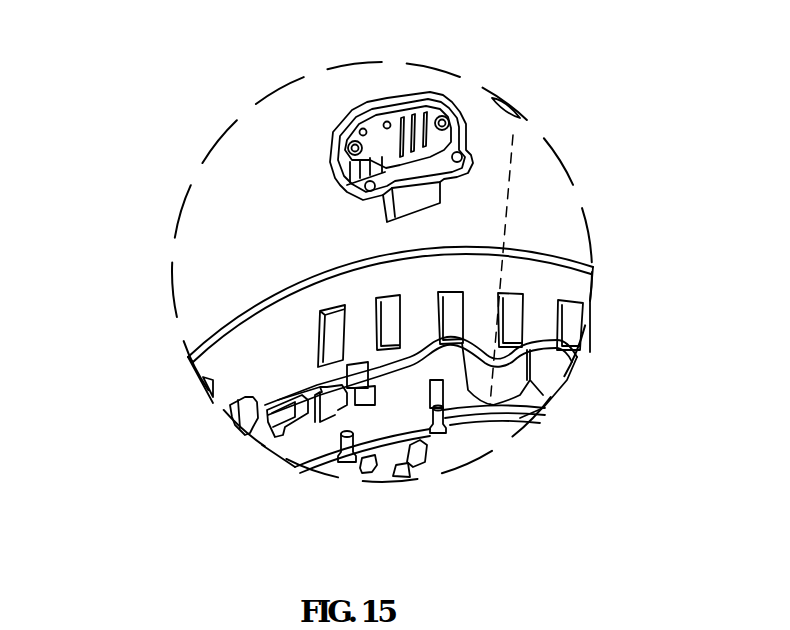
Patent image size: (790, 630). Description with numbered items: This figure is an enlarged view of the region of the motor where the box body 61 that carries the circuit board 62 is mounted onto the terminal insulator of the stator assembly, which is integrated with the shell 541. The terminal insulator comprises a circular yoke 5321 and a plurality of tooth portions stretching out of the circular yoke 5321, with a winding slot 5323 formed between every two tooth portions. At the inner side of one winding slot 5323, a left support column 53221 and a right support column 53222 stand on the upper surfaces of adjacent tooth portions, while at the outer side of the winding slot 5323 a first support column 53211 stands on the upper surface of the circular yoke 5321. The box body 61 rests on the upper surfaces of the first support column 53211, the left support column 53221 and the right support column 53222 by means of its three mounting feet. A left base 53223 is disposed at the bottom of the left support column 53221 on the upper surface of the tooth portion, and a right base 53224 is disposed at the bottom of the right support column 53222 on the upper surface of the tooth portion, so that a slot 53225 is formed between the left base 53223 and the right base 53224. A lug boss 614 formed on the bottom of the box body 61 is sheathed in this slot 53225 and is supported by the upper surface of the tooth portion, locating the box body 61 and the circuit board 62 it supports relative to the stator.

The box body 61 is at (335, 160).
The circuit board 62 is at (380, 135).
The lug boss 614 is at (418, 198).
The shell 541 is at (287, 327).
The first support column 53211 is at (355, 403).
The circular yoke 5321 is at (505, 383).
The winding slot 5323 is at (320, 445).
The left support column 53221 is at (327, 468).
The right support column 53222 is at (443, 427).
The left base 53223 is at (370, 473).
The right base 53224 is at (417, 465).
The slot 53225 is at (387, 463).